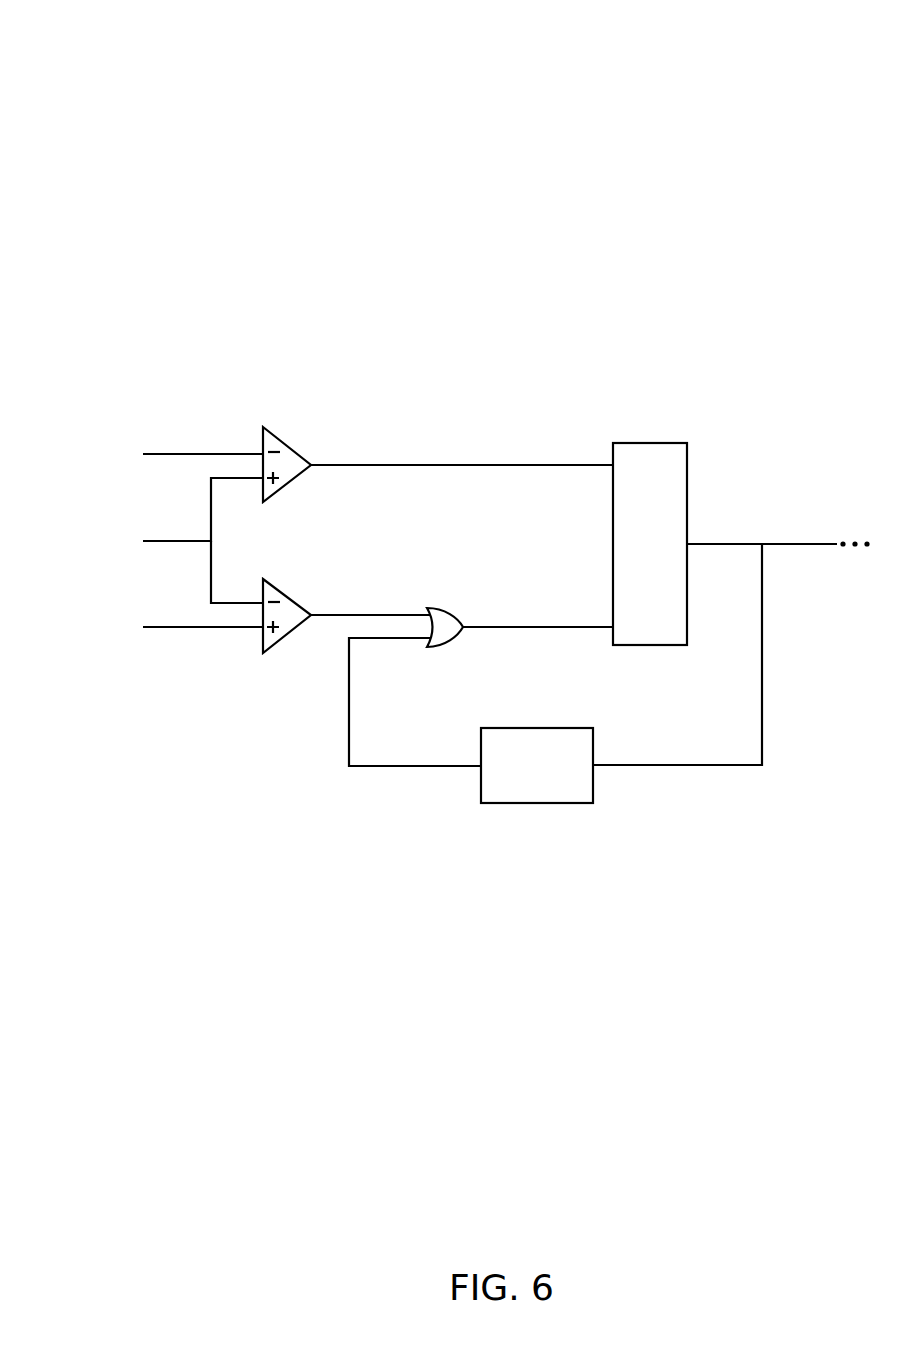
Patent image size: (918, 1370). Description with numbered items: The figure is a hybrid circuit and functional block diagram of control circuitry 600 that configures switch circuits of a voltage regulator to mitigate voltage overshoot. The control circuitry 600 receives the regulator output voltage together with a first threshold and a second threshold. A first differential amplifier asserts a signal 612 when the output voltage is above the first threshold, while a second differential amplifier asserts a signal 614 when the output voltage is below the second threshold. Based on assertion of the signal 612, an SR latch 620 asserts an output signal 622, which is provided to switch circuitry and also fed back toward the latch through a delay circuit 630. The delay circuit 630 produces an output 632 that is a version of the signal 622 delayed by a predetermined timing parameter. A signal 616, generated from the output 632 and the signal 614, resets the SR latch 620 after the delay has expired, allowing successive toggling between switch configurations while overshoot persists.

The control circuitry 600 is at (116, 74).
The signal 612 is at (337, 465).
The signal 614 is at (337, 615).
The signal 616 is at (575, 627).
The SR latch 620 is at (676, 443).
The output signal 622 is at (648, 765).
The delay circuit 630 is at (537, 765).
The output 632 is at (387, 766).